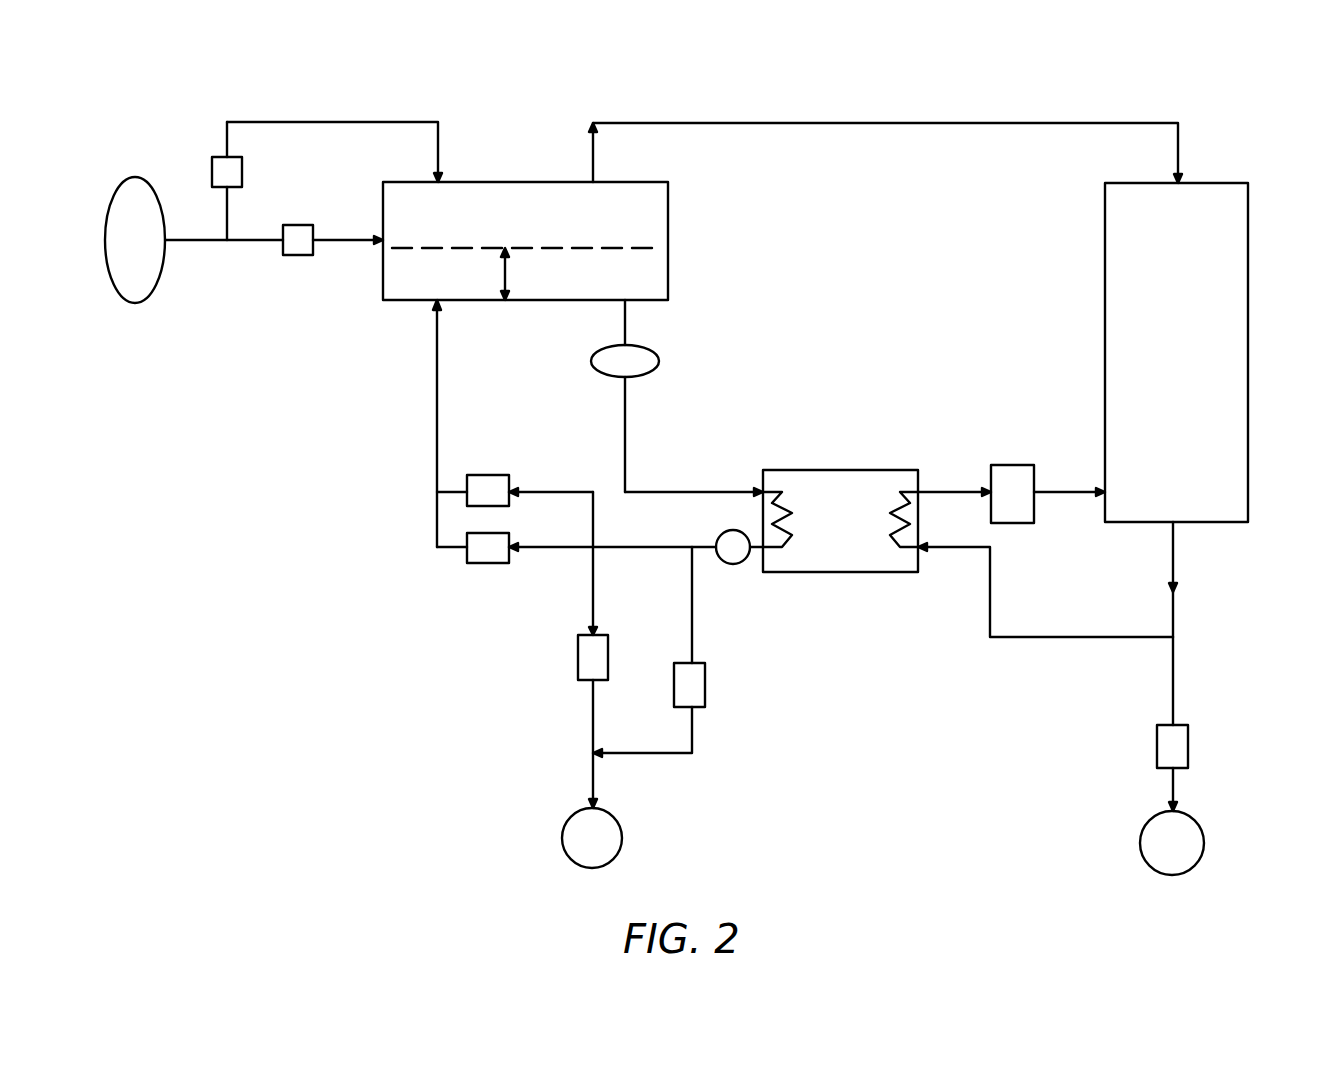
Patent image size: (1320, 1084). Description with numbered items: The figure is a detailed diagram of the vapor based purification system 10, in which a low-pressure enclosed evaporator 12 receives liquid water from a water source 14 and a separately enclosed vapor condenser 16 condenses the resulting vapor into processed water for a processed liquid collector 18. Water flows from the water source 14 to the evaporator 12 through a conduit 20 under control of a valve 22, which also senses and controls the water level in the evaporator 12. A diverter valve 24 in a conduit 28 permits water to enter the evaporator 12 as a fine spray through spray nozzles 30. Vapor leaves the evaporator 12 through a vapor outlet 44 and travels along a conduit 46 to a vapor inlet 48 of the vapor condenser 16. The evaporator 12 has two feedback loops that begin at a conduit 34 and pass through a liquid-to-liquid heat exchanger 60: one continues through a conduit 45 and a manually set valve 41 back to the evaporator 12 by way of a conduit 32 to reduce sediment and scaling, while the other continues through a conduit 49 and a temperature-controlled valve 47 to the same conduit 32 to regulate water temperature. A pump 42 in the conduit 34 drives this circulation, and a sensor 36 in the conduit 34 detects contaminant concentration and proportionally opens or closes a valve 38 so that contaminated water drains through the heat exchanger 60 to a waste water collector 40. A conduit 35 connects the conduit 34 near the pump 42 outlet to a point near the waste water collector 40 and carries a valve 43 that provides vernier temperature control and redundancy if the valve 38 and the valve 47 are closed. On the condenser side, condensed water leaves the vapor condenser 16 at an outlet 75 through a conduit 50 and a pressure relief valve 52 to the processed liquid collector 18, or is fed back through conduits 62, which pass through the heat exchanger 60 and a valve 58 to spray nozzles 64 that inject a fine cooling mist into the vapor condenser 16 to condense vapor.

The vapor based purification system 10 is at (200, 90).
The low-pressure enclosed evaporator 12 is at (676, 247).
The water source 14 is at (143, 177).
The vapor condenser 16 is at (1097, 252).
The processed liquid collector 18 is at (1204, 838).
The conduit 20 is at (195, 243).
The valve 22 is at (298, 255).
The diverter valve 24 is at (242, 172).
The conduit 28 is at (338, 124).
The spray nozzles 30 is at (440, 184).
The conduit 32 is at (437, 393).
The conduit 34 is at (625, 327).
The conduit 35 is at (692, 643).
The sensor 36 is at (659, 361).
The valve 38 is at (578, 667).
The waste water collector 40 is at (622, 836).
The valve 41 is at (485, 475).
The pump 42 is at (735, 565).
The valve 43 is at (705, 695).
The vapor outlet 44 is at (593, 184).
The conduit 45 is at (556, 490).
The conduit 46 is at (877, 124).
The valve 47 is at (477, 565).
The vapor inlet 48 is at (1178, 185).
The conduit 49 is at (548, 550).
The conduit 50 is at (1173, 688).
The pressure relief valve 52 is at (1188, 746).
The valve 58 is at (1015, 465).
The liquid-to-liquid heat exchanger 60 is at (828, 470).
The conduits 62 is at (1062, 497).
The spray nozzles 64 is at (1105, 492).
The outlet 75 is at (1175, 522).